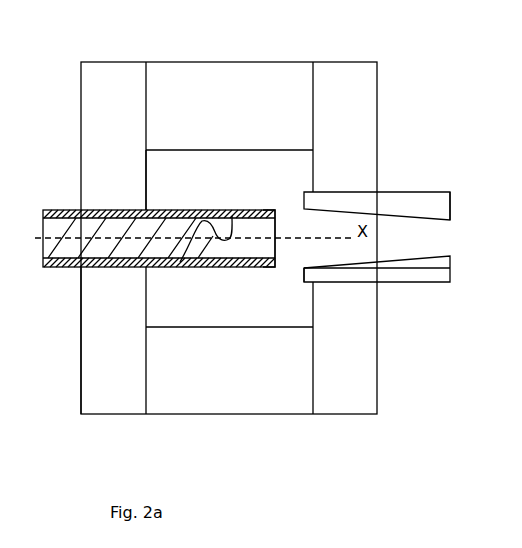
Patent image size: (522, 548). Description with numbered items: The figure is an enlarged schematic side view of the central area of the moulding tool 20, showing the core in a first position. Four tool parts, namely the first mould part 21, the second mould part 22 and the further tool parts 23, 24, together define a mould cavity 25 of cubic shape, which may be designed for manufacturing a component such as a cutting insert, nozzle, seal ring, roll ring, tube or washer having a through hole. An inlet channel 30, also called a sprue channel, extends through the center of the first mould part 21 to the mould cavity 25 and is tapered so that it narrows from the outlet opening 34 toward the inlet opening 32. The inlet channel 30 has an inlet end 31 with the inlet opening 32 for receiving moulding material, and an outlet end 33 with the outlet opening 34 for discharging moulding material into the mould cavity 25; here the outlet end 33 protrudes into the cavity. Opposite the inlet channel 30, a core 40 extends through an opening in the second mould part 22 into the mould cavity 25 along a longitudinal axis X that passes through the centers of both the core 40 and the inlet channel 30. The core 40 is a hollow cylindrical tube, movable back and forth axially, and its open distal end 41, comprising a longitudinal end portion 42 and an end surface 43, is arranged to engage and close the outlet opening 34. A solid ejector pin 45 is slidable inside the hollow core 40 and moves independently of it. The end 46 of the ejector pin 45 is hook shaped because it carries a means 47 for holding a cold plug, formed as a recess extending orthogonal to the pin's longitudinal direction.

The moulding tool 20 is at (420, 49).
The first mould part 21 is at (342, 92).
The second mould part 22 is at (102, 392).
The tool part 23 is at (169, 392).
The tool part 24 is at (224, 79).
The mould cavity 25 is at (201, 166).
The inlet channel 30 is at (397, 237).
The inlet end 31 is at (444, 267).
The inlet opening 32 is at (444, 234).
The outlet end 33 is at (300, 283).
The outlet opening 34 is at (305, 247).
The core 40 is at (62, 268).
The end of the core 41 is at (263, 189).
The longitudinal end portion 42 is at (261, 272).
The end surface 43 is at (279, 212).
The ejector pin 45 is at (112, 237).
The end of the ejector pin 46 is at (219, 226).
The means for holding a cold plug 47 is at (207, 248).